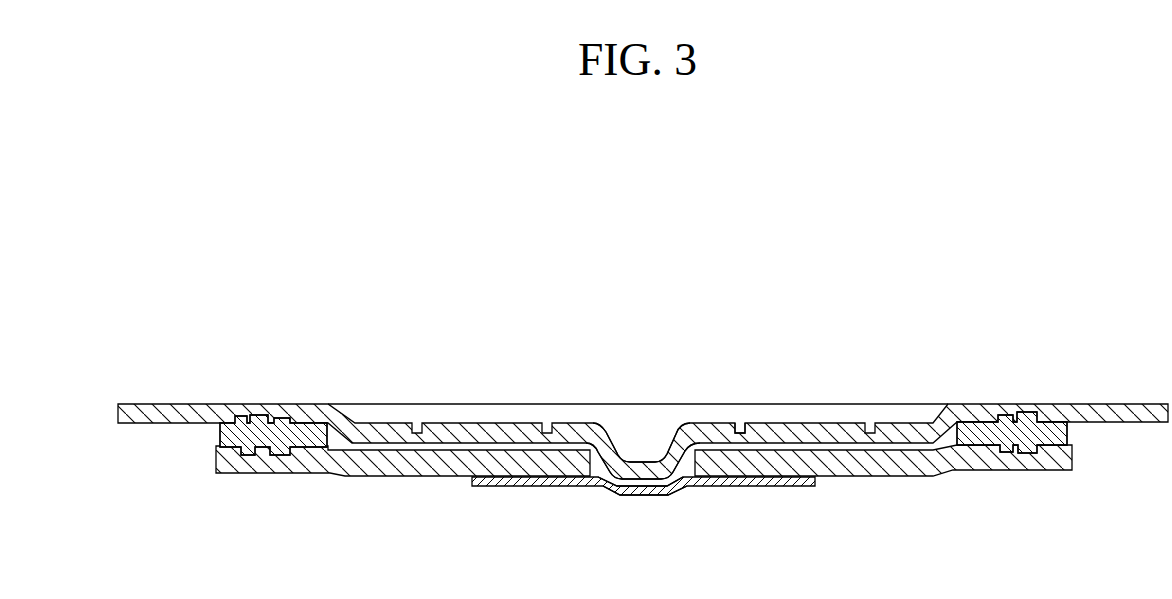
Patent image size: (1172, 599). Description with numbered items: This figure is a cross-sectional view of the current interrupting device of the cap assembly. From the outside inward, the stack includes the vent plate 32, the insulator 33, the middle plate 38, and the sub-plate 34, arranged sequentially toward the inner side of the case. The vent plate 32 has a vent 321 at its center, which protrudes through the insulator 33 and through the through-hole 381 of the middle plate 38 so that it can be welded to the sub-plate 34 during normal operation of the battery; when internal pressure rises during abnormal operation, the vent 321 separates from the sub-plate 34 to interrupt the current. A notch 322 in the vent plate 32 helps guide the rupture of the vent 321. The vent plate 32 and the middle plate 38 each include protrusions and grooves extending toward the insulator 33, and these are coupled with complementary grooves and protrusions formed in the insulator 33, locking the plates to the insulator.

The vent plate 32 is at (178, 412).
The vent 321 is at (643, 472).
The notch 322 is at (740, 430).
The insulator 33 is at (304, 432).
The sub-plate 34 is at (547, 480).
The middle plate 38 is at (240, 463).
The through-hole 381 is at (679, 478).